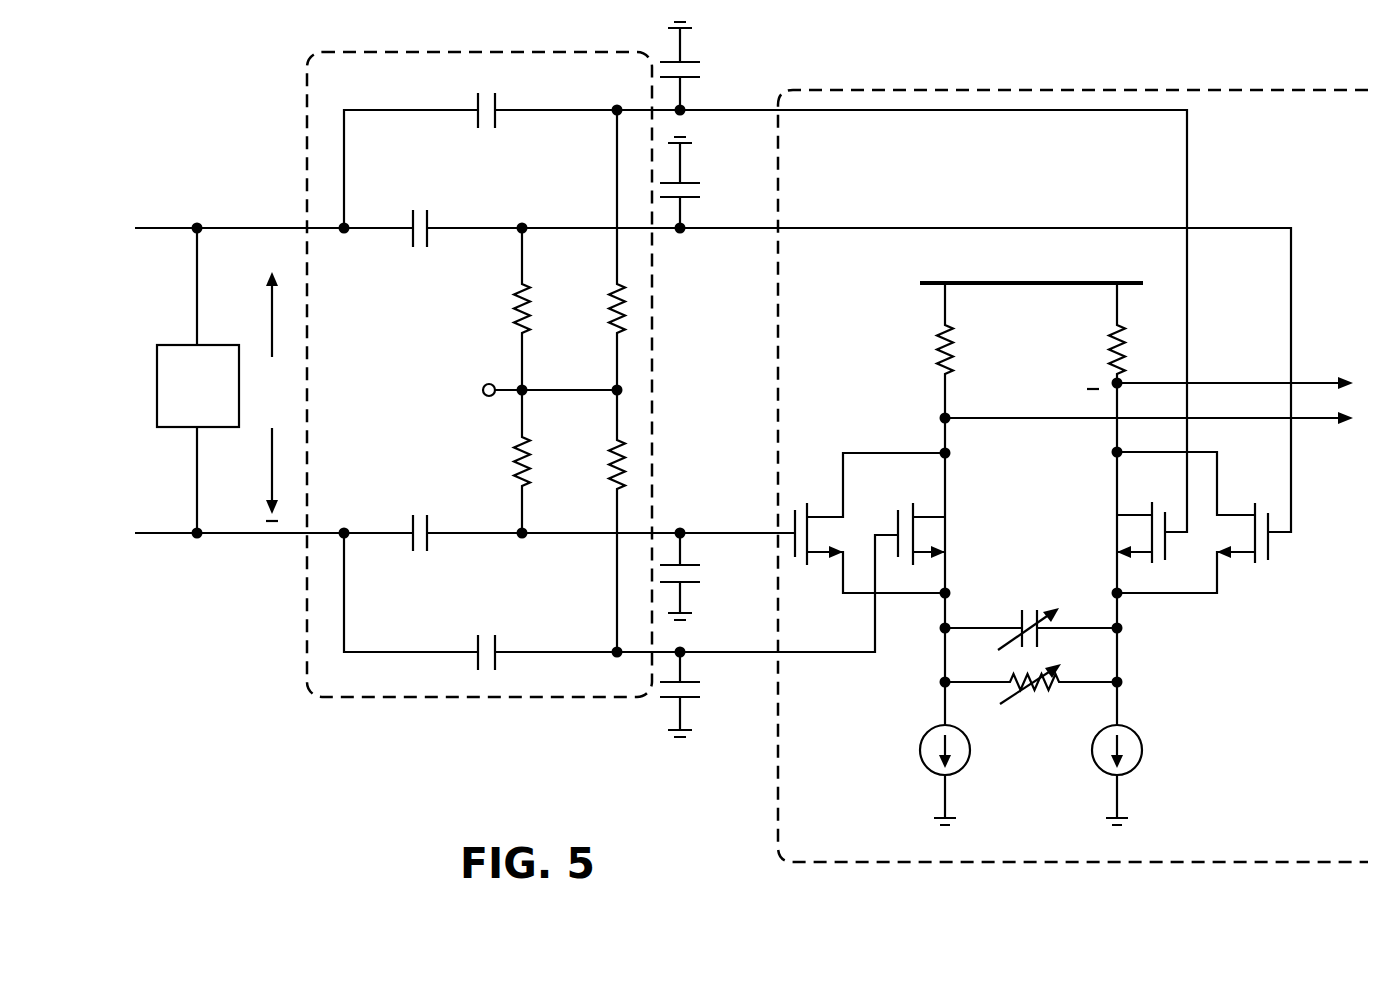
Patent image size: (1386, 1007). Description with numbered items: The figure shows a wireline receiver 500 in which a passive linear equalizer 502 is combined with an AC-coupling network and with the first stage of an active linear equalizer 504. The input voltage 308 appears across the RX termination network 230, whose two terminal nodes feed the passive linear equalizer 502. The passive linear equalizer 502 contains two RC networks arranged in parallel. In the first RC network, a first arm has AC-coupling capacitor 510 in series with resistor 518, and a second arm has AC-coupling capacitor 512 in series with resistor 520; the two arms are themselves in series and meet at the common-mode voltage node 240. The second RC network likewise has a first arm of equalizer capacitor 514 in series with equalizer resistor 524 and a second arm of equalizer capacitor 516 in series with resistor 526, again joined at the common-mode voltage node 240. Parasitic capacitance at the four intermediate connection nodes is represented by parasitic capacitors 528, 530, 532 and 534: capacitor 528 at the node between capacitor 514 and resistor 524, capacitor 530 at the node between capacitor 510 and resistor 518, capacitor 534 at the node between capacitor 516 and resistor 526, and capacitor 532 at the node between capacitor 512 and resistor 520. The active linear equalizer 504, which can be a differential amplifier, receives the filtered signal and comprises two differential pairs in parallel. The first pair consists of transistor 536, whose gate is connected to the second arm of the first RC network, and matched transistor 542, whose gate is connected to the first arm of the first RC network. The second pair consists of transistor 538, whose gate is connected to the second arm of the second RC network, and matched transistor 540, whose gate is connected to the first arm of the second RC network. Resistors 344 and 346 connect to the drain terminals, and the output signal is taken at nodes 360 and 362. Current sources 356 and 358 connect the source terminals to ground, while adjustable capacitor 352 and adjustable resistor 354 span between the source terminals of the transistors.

The wireline receiver 500 is at (235, 71).
The passive linear equalizer 502 is at (695, 380).
The active linear equalizer 504 is at (1073, 457).
The RX termination network 230 is at (157, 393).
The input voltage Vin 308 is at (272, 377).
The common-mode voltage node 240 is at (509, 393).
The AC-coupling capacitor 510 is at (424, 230).
The AC-coupling capacitor 512 is at (424, 538).
The equalizer capacitor 514 is at (765, 298).
The equalizer capacitor 516 is at (621, 601).
The resistor 518 is at (477, 309).
The resistor 520 is at (477, 461).
The equalizer resistor 524 is at (592, 250).
The resistor 526 is at (592, 521).
The parasitic capacitor 528 is at (712, 66).
The parasitic capacitor 530 is at (712, 182).
The parasitic capacitor 532 is at (713, 579).
The parasitic capacitor 534 is at (713, 695).
The resistor 344 is at (970, 350).
The resistor 346 is at (1143, 333).
The output node 360 is at (1128, 401).
The output node 362 is at (1220, 397).
The transistor 536 is at (850, 520).
The transistor 538 is at (962, 520).
The transistor 540 is at (1090, 524).
The transistor 542 is at (1245, 550).
The adjustable capacitor 352 is at (1031, 598).
The adjustable resistor 354 is at (1031, 716).
The current source 356 is at (920, 758).
The current source 358 is at (1142, 758).